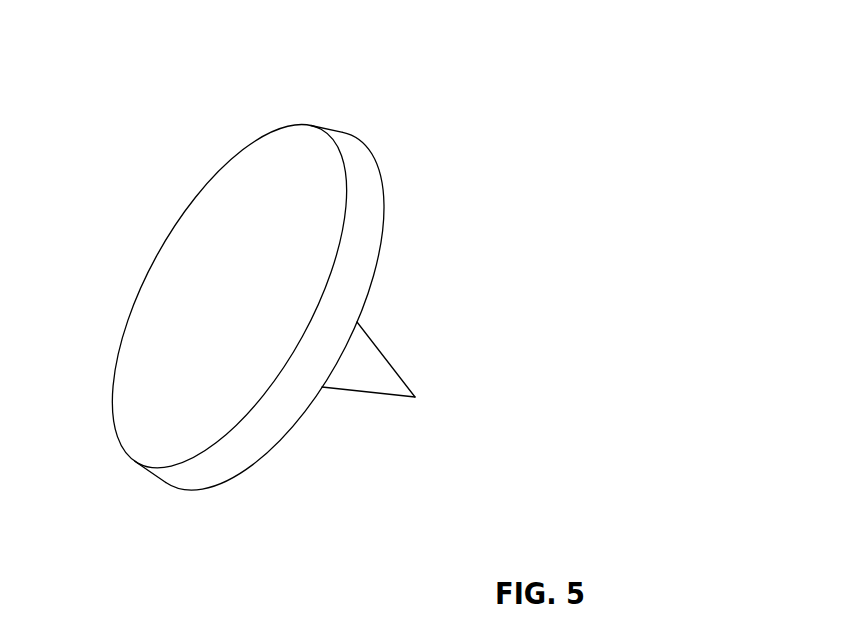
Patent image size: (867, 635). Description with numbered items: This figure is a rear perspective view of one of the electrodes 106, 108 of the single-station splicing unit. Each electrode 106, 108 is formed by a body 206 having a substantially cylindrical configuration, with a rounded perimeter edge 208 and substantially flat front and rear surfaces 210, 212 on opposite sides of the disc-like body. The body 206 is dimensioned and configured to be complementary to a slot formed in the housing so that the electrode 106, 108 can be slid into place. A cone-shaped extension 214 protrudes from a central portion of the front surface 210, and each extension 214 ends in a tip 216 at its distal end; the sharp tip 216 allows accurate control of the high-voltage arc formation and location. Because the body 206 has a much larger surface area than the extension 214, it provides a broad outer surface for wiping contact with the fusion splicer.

The electrode 106 is at (389, 51).
The electrode 108 is at (254, 319).
The body 206 is at (173, 230).
The rounded perimeter edge 208 is at (197, 476).
The front surface 210 is at (385, 231).
The rear surface 212 is at (145, 370).
The cone-shaped extension 214 is at (380, 367).
The tip 216 is at (415, 397).